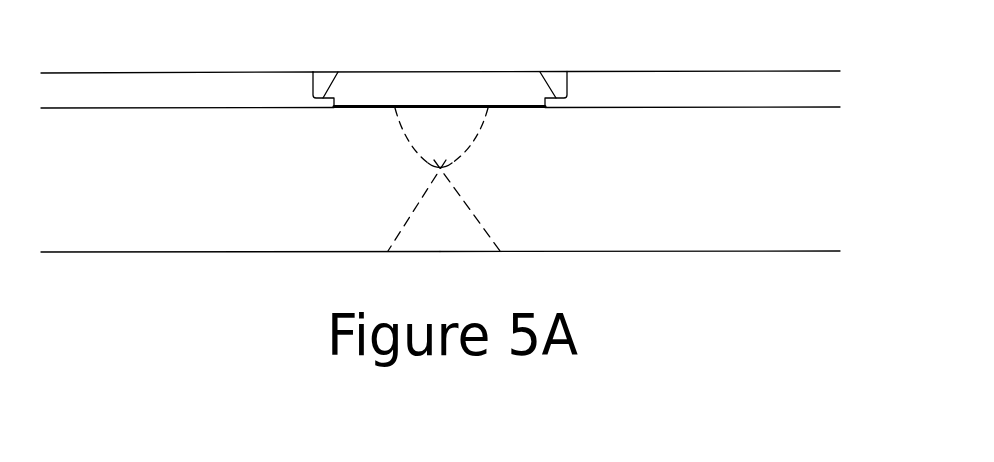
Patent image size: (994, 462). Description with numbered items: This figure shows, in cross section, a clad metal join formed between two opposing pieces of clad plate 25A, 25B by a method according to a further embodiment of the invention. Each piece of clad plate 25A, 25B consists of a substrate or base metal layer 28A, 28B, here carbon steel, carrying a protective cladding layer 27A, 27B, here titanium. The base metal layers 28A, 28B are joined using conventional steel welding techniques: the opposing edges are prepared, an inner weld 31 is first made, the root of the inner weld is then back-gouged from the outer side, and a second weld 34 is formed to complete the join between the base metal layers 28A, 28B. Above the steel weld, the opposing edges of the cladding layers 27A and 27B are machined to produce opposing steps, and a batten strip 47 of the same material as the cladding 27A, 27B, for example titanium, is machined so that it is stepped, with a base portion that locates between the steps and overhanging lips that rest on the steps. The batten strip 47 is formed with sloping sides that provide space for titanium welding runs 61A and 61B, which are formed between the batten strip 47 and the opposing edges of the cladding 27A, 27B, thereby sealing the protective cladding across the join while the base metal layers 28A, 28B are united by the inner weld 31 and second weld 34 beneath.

The piece of clad plate 25A is at (278, 270).
The piece of clad plate 25B is at (613, 272).
The protective cladding layer 27A is at (303, 104).
The protective cladding layer 27B is at (640, 104).
The base metal layer 28A is at (312, 195).
The base metal layer 28B is at (637, 195).
The inner weld 31 is at (457, 144).
The second weld 34 is at (457, 219).
The batten strip 47 is at (453, 102).
The titanium welding run 61A is at (327, 82).
The titanium welding run 61B is at (557, 80).